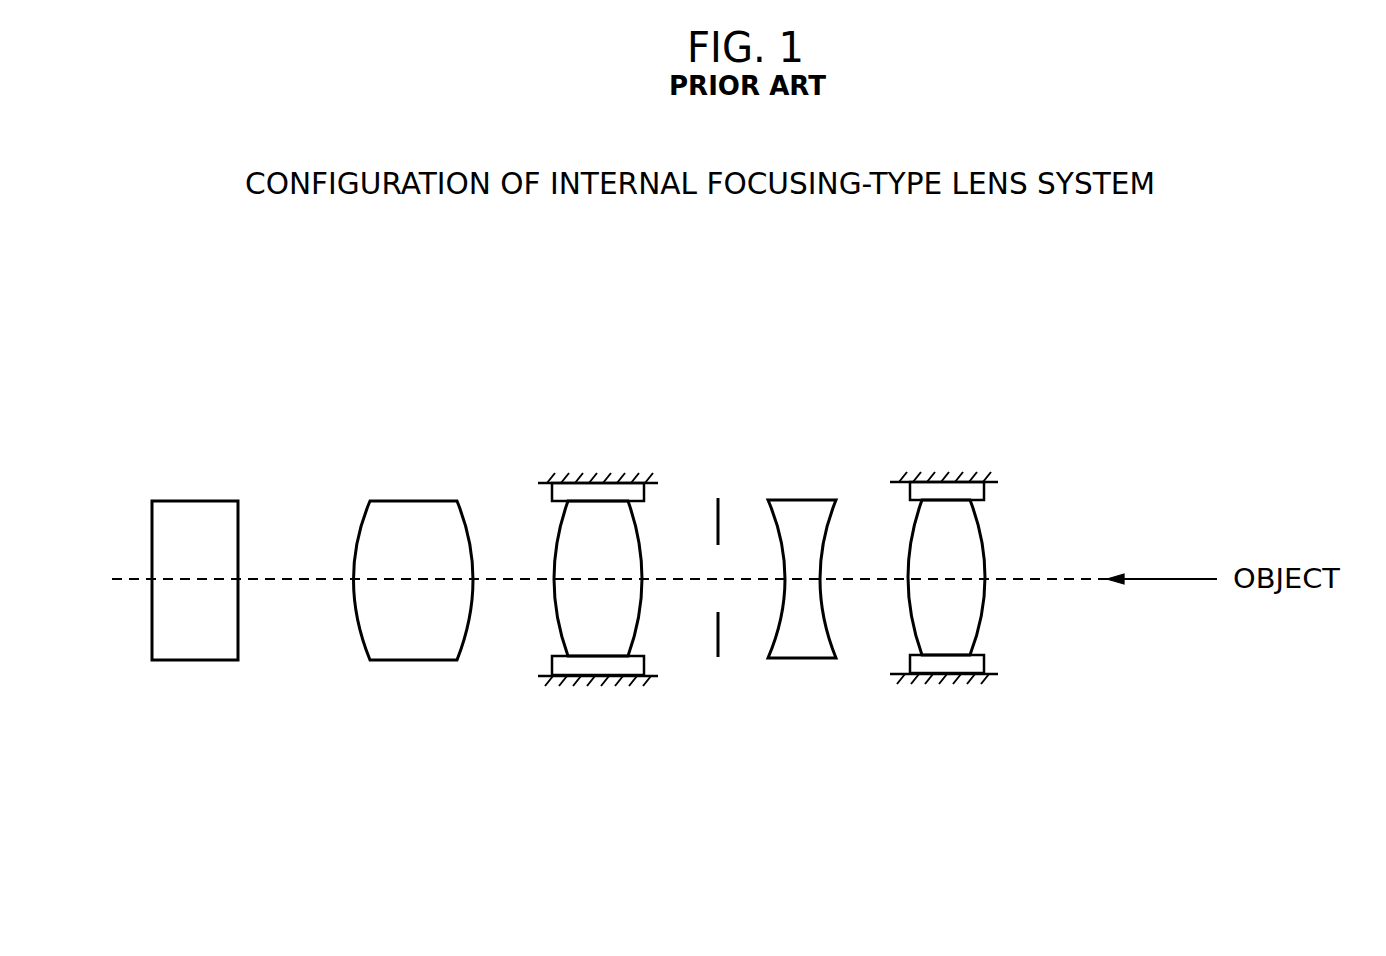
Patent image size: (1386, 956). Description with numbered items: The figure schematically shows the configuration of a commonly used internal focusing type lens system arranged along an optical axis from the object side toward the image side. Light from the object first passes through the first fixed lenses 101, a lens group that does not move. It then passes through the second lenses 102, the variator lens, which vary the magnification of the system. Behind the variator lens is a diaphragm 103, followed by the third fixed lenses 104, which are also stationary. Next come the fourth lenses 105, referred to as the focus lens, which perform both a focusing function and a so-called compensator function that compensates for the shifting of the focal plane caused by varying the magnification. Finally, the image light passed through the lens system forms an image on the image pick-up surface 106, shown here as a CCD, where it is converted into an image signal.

The first fixed lenses 101 is at (945, 468).
The second lenses for varying magnification (variator lens) 102 is at (810, 500).
The diaphragm 103 is at (718, 497).
The third fixed lenses 104 is at (605, 467).
The fourth lenses (focus lens) 105 is at (410, 500).
The image pick-up surface 106 is at (189, 500).